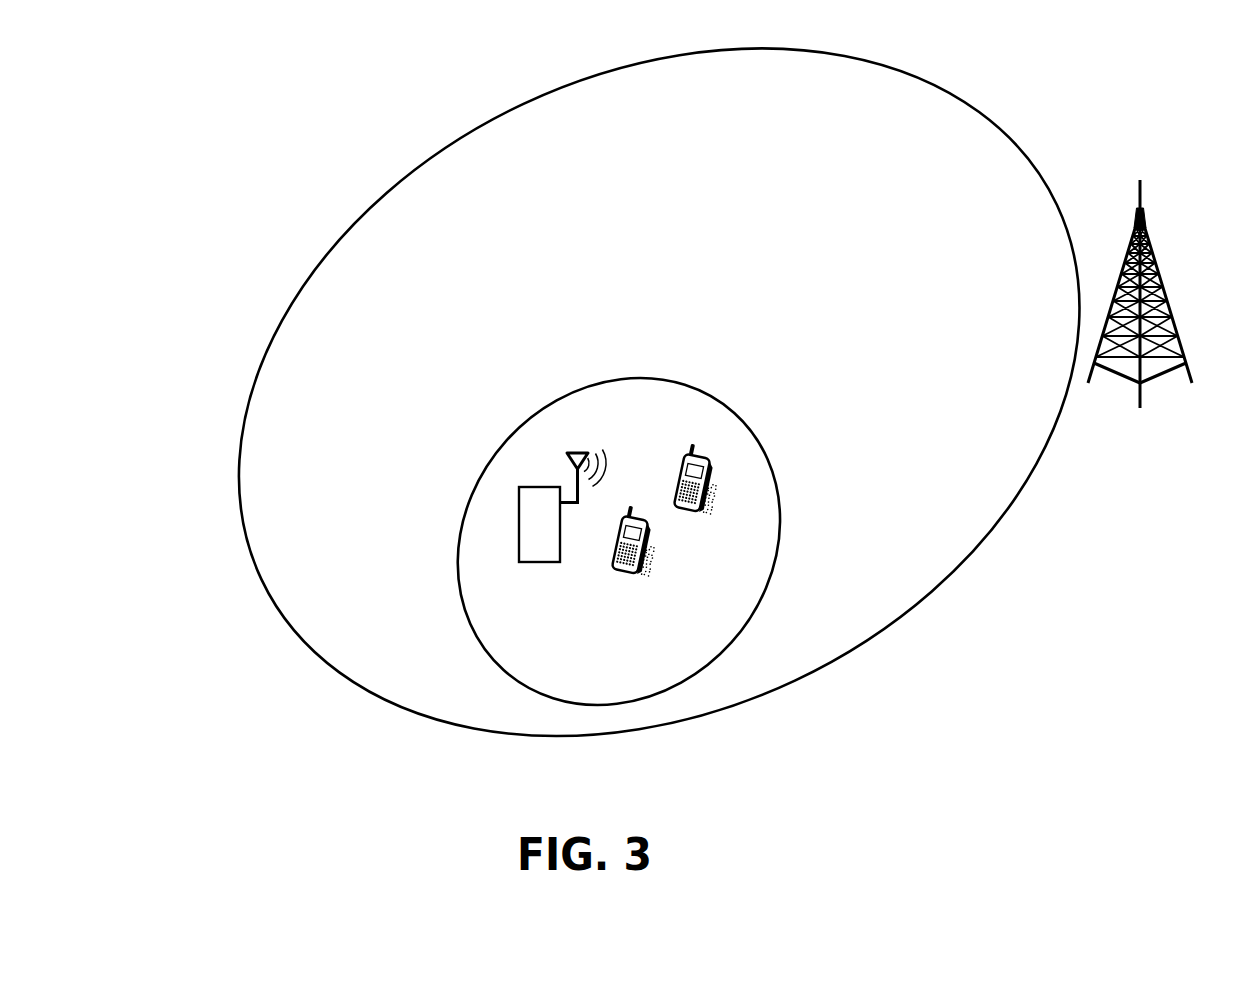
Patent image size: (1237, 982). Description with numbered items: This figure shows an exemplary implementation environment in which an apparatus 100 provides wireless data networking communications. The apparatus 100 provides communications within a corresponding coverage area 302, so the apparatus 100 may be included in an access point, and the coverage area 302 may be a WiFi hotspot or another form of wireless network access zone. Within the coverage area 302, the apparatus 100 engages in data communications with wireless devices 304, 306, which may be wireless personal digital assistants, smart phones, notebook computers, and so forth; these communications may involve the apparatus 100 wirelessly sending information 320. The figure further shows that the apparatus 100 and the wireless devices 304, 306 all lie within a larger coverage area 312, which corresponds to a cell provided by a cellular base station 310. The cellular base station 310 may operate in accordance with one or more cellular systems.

The coverage area 312 is at (969, 101).
The cellular base station 310 is at (1142, 200).
The coverage area 302 is at (767, 455).
The apparatus 100 is at (519, 513).
The information 320 is at (605, 466).
The wireless device 304 is at (650, 553).
The wireless device 306 is at (712, 490).